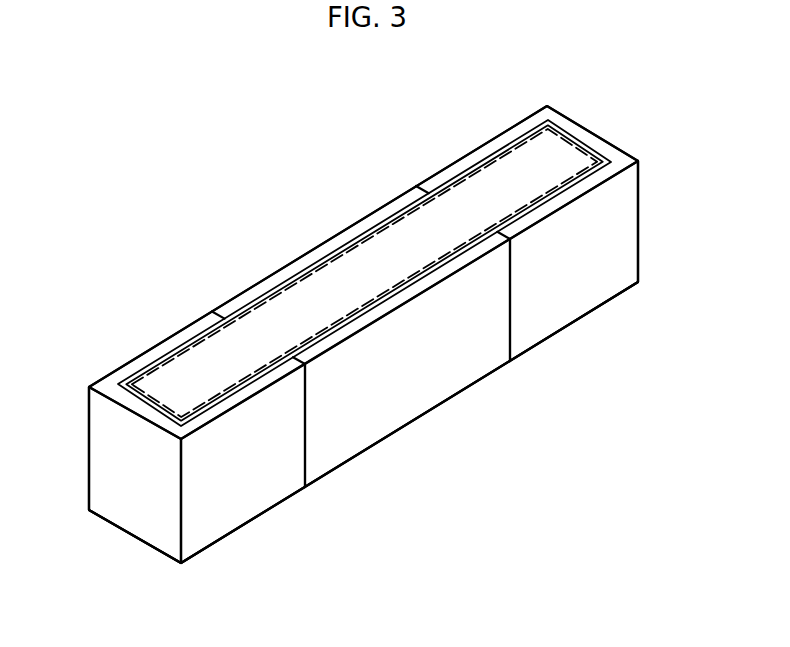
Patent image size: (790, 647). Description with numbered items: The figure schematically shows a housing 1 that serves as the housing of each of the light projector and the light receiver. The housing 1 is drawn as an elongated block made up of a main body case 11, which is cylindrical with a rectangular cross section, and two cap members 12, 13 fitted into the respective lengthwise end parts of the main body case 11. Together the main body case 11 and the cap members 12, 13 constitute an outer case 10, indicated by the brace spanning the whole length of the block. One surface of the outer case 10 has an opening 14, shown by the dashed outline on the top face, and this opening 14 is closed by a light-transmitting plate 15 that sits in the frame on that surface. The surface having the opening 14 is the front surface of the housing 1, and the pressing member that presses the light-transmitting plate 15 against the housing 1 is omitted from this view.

The housing 1 is at (89, 104).
The outer case 10 is at (675, 330).
The main body case 11 is at (423, 415).
The cap member 12 is at (248, 523).
The cap member 13 is at (580, 320).
The opening 14 is at (575, 144).
The light-transmitting plate 15 is at (478, 190).